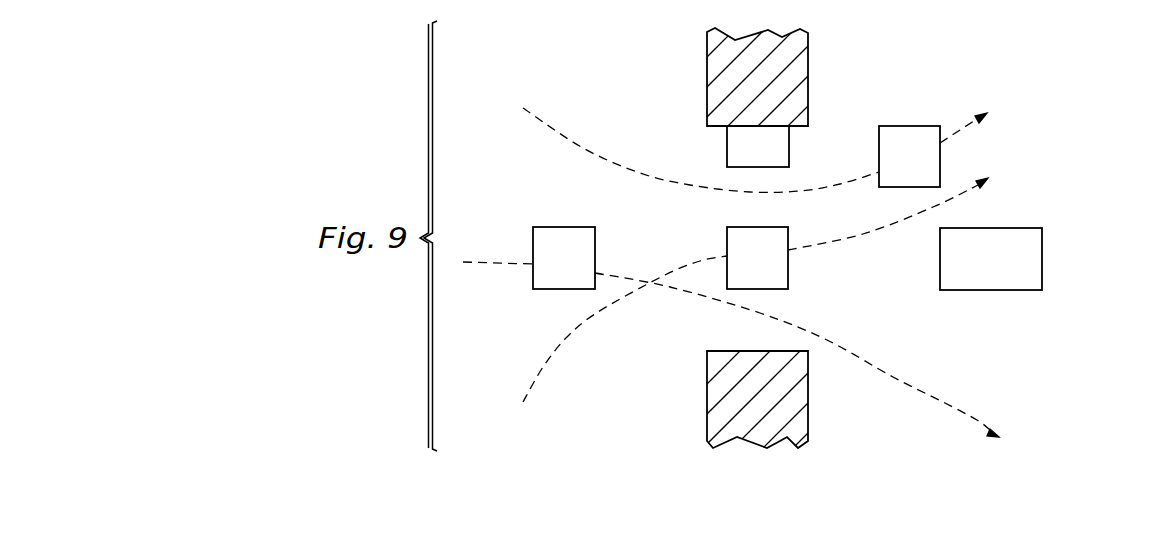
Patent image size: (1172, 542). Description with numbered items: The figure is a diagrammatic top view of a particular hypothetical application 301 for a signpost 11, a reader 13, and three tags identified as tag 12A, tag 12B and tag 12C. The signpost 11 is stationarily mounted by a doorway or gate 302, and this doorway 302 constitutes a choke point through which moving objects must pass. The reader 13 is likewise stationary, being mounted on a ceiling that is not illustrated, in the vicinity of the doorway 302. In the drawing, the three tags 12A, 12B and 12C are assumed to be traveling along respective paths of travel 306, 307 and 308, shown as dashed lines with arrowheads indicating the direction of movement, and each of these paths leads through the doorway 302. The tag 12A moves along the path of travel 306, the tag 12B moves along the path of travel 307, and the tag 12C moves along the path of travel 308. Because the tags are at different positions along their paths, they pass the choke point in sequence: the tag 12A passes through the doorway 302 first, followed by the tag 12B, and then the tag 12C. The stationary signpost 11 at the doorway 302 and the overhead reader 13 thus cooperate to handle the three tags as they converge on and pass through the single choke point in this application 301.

The signpost 11 is at (727, 148).
The tag 12A is at (910, 126).
The tag 12B is at (788, 270).
The tag 12C is at (565, 227).
The reader 13 is at (1042, 270).
The hypothetical application 301 is at (1058, 92).
The doorway or gate 302 is at (808, 400).
The path of travel 306 is at (578, 146).
The path of travel 307 is at (676, 268).
The path of travel 308 is at (488, 262).